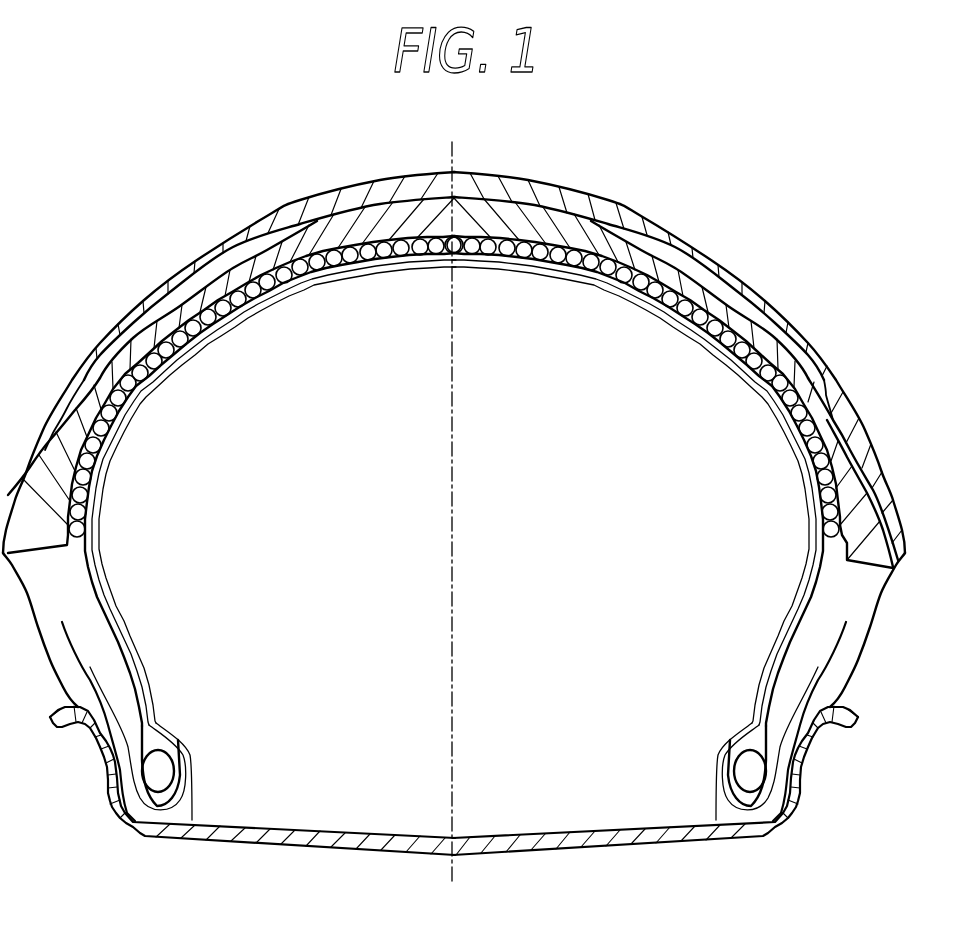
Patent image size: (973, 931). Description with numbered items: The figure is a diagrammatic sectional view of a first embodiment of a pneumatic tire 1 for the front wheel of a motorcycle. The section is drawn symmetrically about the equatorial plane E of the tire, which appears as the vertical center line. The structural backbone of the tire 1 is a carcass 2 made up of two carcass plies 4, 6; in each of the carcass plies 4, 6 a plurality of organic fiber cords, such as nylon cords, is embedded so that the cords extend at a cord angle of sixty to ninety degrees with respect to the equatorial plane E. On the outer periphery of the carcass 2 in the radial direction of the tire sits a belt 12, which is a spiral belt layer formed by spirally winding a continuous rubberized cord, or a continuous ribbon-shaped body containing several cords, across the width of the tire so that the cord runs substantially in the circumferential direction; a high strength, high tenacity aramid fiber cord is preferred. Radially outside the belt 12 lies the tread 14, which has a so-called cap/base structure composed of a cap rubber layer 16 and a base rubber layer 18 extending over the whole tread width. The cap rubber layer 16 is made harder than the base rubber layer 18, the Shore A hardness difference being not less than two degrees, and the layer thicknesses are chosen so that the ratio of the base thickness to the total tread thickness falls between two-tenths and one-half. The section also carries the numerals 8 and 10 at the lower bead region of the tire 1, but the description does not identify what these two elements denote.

The pneumatic tire 1 is at (712, 248).
The carcass 2 is at (730, 543).
The carcass ply 4 is at (822, 560).
The carcass ply 6 is at (823, 610).
The bead portion 8 is at (730, 737).
The bead core 10 is at (753, 779).
The belt 12 is at (550, 248).
The tread 14 is at (53, 160).
The cap rubber layer 16 is at (170, 303).
The base rubber layer 18 is at (210, 288).
The equatorial plane E is at (452, 153).